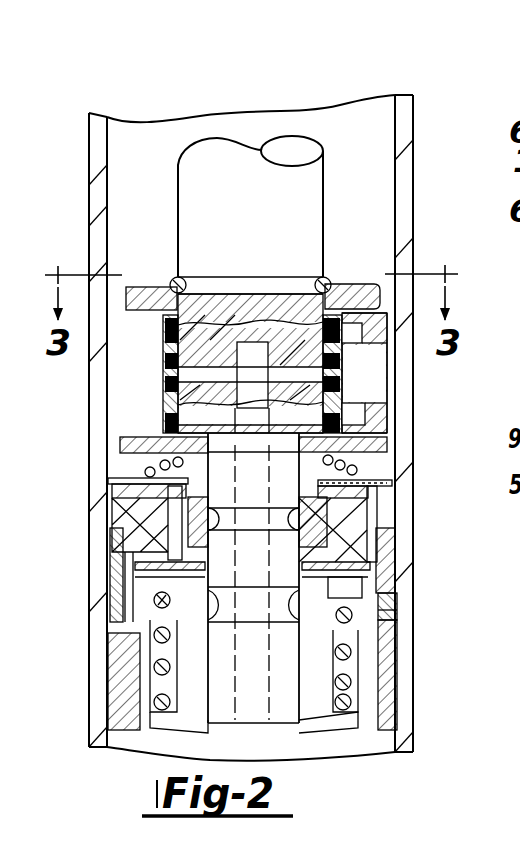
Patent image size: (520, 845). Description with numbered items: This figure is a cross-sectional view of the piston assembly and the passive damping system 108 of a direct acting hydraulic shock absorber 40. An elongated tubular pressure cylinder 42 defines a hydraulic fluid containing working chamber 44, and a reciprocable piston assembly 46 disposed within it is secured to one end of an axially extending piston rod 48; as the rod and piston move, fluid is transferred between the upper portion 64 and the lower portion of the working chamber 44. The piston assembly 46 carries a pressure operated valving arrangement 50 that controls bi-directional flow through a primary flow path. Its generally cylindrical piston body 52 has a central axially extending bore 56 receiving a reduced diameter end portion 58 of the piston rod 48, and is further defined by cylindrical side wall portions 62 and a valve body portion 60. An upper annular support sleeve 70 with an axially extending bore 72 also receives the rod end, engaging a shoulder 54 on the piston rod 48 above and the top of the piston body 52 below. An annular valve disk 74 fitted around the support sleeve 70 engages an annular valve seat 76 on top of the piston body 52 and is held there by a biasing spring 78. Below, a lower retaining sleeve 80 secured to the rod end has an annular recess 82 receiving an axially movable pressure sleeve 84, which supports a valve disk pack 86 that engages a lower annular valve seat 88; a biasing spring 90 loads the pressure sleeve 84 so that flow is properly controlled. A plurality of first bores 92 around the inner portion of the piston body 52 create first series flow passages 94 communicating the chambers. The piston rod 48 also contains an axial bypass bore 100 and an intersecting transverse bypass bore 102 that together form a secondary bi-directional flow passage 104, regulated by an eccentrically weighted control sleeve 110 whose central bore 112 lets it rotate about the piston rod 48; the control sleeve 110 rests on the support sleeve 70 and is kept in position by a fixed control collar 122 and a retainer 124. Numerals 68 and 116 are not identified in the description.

The shock absorber 40 is at (172, 104).
The pressure cylinder 42 is at (98, 124).
The working chamber 44 is at (124, 727).
The piston assembly 46 is at (126, 720).
The piston rod 48 is at (228, 150).
The pressure operated valving arrangement 50 is at (400, 613).
The piston body 52 is at (134, 556).
The shoulder 54 is at (132, 452).
The central axially extending bore 56 is at (306, 528).
The reduced diameter end portion 58 is at (330, 722).
The valve body portion 60 is at (362, 497).
The cylindrical side wall portions 62 is at (148, 641).
The upper portion 64 is at (122, 166).
The bottom wall 68 is at (152, 745).
The upper annular support sleeve 70 is at (312, 466).
The axially extending bore 72 is at (390, 478).
The annular valve disk 74 is at (114, 483).
The annular valve seat 76 is at (158, 540).
The biasing spring 78 is at (146, 471).
The lower retaining sleeve 80 is at (402, 753).
The annular recess 82 is at (390, 620).
The pressure sleeve 84 is at (412, 631).
The valve disk pack 86 is at (408, 559).
The annular valve seat 88 is at (386, 559).
The biasing spring 90 is at (358, 688).
The first bores 92 is at (140, 636).
The first series flow passages 94 is at (150, 672).
The axial bypass bore 100 is at (258, 340).
The transverse bypass bore 102 is at (180, 401).
The secondary bi-directional flow passage 104 is at (170, 365).
The passive damping system 108 is at (210, 318).
The eccentrically weighted control sleeve 110 is at (380, 300).
The central bore 112 is at (340, 390).
The hatched body portion 116 is at (200, 378).
The fixed control collar 122 is at (365, 277).
The retainer 124 is at (343, 277).